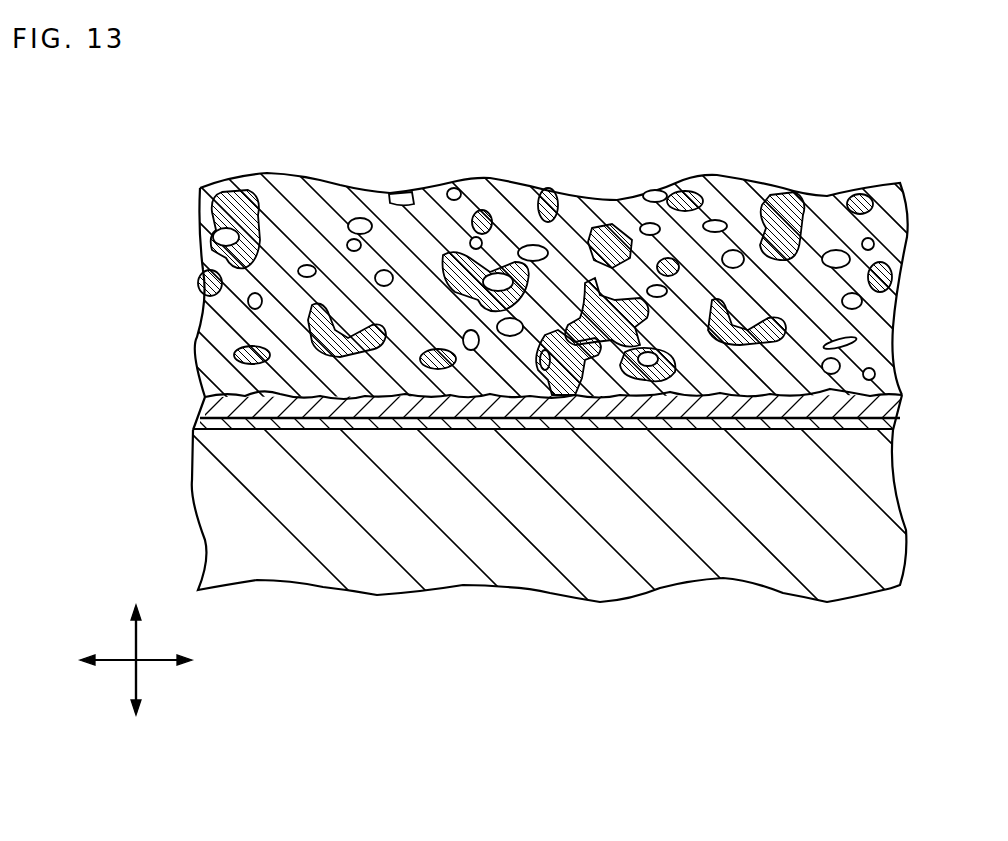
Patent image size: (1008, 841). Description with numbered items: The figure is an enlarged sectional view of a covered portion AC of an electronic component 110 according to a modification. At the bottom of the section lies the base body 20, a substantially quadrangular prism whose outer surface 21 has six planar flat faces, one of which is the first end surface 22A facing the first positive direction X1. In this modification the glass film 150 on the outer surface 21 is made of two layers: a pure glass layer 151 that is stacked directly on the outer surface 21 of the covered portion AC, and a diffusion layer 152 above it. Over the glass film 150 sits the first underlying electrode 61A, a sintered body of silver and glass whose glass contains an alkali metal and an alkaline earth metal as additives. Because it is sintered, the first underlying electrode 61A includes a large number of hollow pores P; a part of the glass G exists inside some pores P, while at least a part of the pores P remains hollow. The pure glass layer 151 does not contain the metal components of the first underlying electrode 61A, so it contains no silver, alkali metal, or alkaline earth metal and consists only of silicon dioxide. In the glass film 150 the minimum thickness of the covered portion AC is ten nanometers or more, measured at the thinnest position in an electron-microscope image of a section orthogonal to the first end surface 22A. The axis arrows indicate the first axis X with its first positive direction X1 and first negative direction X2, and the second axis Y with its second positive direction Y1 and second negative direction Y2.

The electronic component 110 is at (283, 150).
The first underlying electrode 61A is at (340, 198).
The pores P is at (602, 226).
The glass G is at (616, 236).
The glass film 150 is at (110, 392).
The diffusion layer 152 is at (206, 400).
The pure glass layer 151 is at (200, 427).
The first end surface 22A is at (614, 423).
The outer surface 21 is at (650, 448).
The covered portion AC is at (375, 432).
The base body 20 is at (288, 568).
The first axis X is at (130, 625).
The second axis Y is at (103, 656).
The first positive direction X1 is at (134, 680).
The first negative direction X2 is at (138, 646).
The second positive direction Y1 is at (152, 662).
The second negative direction Y2 is at (120, 656).